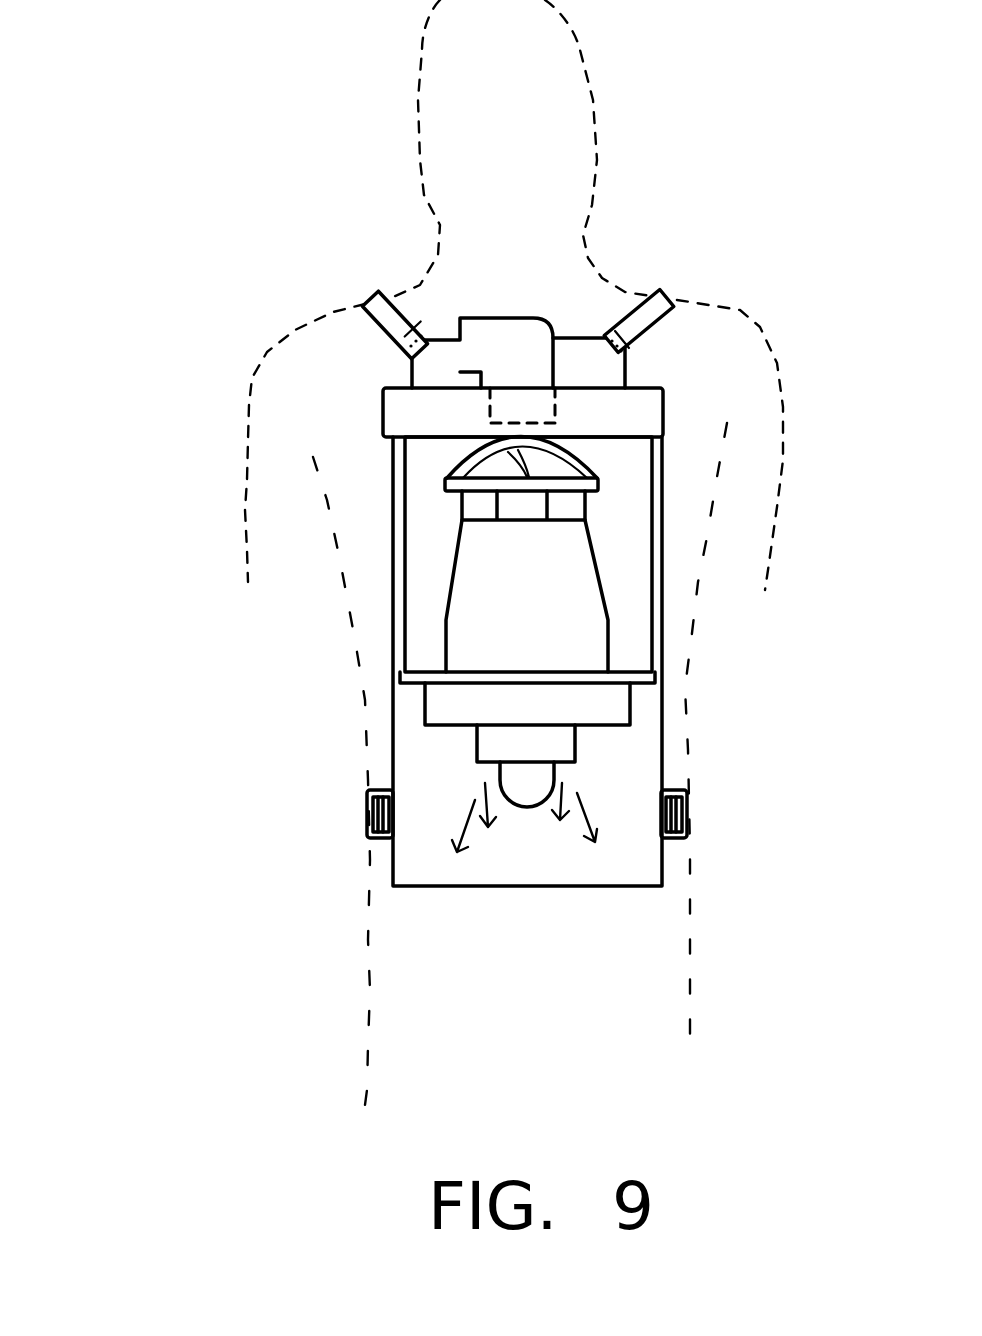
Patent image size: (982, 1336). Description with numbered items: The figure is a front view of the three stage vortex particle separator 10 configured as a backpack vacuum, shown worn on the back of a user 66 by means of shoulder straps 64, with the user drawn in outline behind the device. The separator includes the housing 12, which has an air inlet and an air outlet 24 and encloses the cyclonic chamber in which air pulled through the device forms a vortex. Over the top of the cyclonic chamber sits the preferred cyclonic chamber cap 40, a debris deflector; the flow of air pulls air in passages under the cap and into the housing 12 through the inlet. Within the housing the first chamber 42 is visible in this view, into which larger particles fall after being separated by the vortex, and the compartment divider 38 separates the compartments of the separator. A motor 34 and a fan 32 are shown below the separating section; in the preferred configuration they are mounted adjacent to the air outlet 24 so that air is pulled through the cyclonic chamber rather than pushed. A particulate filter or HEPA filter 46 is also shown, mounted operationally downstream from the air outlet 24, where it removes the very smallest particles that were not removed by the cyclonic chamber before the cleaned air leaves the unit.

The particle separator 10 is at (183, 523).
The housing 12 is at (658, 497).
The air outlet 24 is at (567, 845).
The fan 32 is at (578, 762).
The motor 34 is at (525, 807).
The compartment divider 38 is at (582, 607).
The cyclonic chamber cap 40 is at (563, 452).
The first chamber 42 is at (617, 548).
The particulate filter or HEPA filter 46 is at (442, 725).
The shoulder straps 64 is at (380, 297).
The user 66 is at (307, 378).